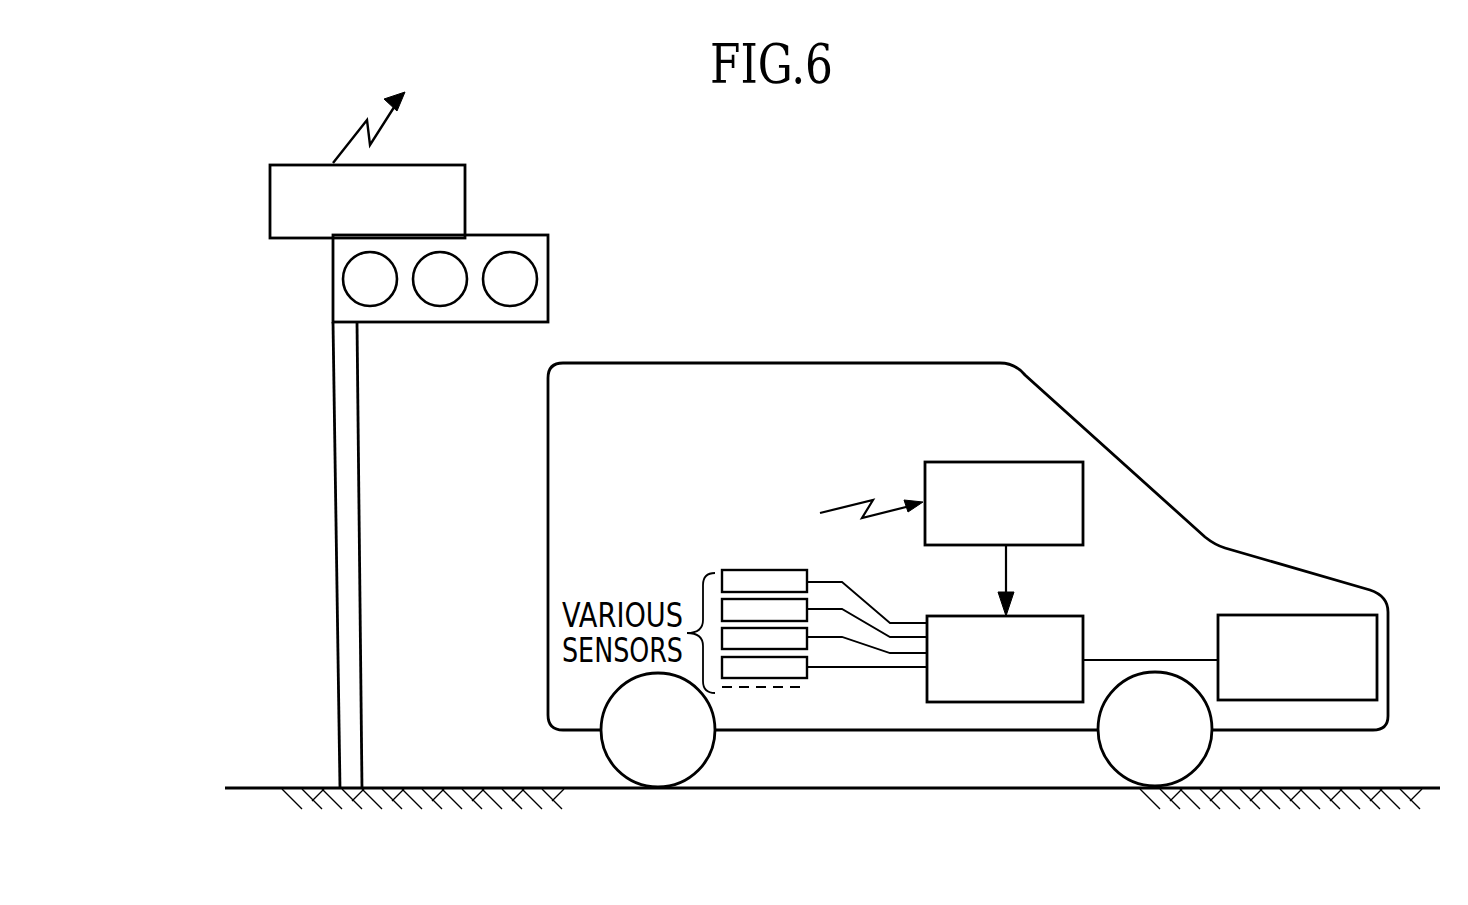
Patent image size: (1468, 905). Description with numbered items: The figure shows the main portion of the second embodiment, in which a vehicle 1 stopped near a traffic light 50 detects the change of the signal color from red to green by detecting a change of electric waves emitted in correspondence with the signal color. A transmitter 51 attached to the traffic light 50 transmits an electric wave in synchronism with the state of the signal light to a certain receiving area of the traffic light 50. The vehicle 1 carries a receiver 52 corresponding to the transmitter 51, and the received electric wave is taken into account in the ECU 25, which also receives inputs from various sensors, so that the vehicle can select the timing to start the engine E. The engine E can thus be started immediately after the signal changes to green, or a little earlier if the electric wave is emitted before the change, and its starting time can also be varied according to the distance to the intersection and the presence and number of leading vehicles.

The vehicle 1 is at (893, 362).
The ECU 25 is at (1083, 628).
The traffic light 50 is at (482, 243).
The transmitter 51 is at (270, 202).
The receiver 52 is at (1083, 487).
The engine E is at (1295, 615).